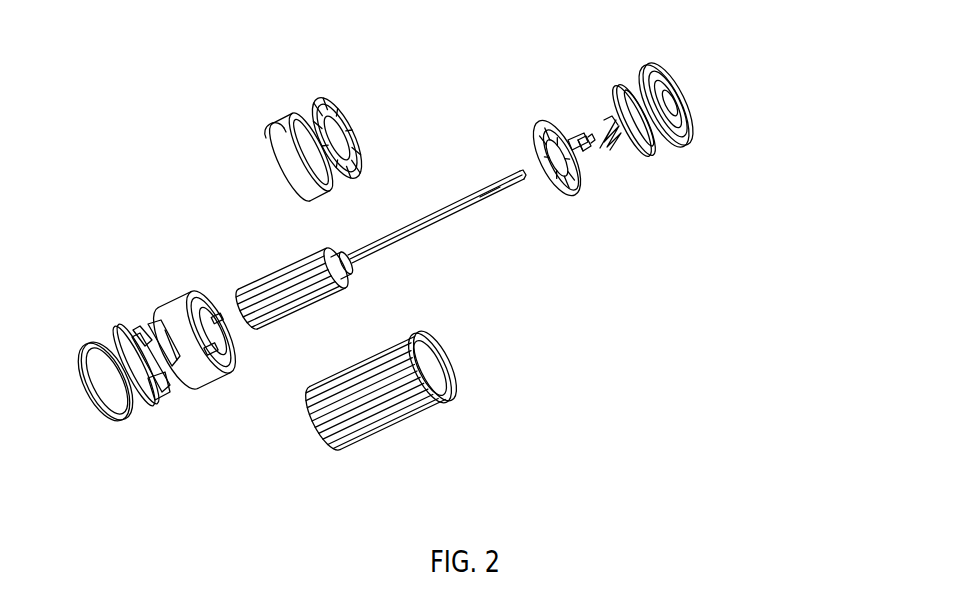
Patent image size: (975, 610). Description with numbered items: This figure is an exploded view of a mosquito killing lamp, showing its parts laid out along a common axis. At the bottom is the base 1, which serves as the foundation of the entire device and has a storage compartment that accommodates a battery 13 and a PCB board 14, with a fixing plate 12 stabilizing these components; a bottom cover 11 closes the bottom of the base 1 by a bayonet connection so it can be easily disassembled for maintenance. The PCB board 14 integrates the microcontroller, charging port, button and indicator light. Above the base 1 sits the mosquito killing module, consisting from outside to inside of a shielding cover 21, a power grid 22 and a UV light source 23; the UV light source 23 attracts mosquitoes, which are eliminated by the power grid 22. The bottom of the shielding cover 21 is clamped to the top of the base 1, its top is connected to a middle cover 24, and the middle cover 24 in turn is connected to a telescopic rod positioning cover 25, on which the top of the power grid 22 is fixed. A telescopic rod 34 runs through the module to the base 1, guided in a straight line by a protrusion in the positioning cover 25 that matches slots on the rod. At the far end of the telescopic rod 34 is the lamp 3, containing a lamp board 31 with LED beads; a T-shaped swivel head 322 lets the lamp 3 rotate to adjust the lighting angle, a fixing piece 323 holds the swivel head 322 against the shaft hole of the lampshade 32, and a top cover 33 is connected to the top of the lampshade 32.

The base 1 is at (144, 302).
The bottom cover 11 is at (134, 418).
The fixing plate 12 is at (190, 405).
The battery 13 is at (81, 301).
The PCB board 14 is at (204, 390).
The shielding cover 21 is at (433, 417).
The power grid 22 is at (274, 264).
The UV light source 23 is at (437, 244).
The middle cover 24 is at (239, 154).
The telescopic rod positioning cover 25 is at (368, 101).
The lamp 3 is at (769, 232).
The lamp board 31 is at (684, 183).
The lampshade 32 is at (643, 257).
The T-shaped swivel head 322 is at (677, 247).
The fixing piece 323 is at (688, 220).
The top cover 33 is at (696, 152).
The telescopic rod 34 is at (609, 308).